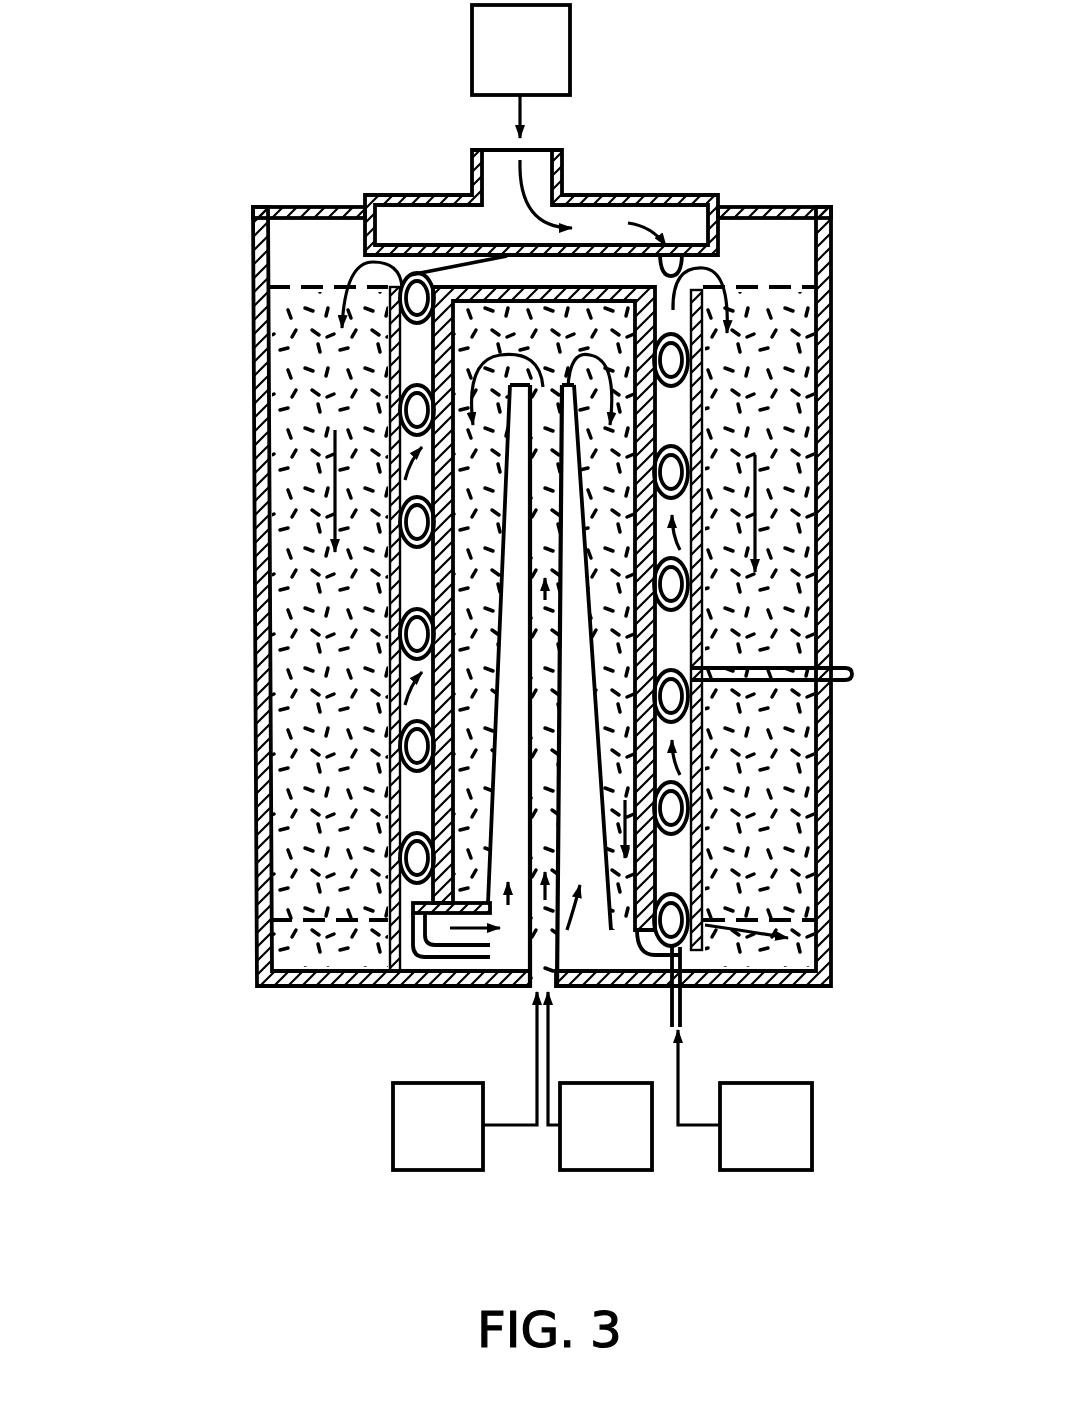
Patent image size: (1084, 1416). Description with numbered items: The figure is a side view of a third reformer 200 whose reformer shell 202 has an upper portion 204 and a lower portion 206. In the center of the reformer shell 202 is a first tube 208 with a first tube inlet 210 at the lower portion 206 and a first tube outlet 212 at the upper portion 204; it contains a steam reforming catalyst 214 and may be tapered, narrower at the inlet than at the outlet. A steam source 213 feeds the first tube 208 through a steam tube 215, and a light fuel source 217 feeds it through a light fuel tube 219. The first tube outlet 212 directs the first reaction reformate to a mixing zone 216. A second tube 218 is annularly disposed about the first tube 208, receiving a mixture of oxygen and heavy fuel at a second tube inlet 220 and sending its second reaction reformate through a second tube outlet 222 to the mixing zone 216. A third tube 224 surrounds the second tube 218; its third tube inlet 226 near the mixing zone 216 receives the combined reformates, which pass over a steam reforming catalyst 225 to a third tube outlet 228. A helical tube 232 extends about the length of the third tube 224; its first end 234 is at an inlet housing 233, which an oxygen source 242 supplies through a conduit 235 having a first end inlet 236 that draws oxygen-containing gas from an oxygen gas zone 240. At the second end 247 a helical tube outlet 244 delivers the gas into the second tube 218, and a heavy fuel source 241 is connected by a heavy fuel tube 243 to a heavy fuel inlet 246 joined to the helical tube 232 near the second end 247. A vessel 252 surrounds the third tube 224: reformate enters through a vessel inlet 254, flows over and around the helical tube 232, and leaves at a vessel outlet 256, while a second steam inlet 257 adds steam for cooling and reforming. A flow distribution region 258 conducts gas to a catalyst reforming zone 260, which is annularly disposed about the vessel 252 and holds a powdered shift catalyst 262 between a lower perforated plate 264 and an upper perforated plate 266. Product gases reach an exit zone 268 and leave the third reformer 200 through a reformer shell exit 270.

The third reformer 200 is at (194, 160).
The reformer shell 202 is at (254, 558).
The upper portion 204 is at (282, 207).
The lower portion 206 is at (270, 986).
The first tube 208 is at (555, 865).
The first tube inlet 210 is at (552, 988).
The first tube outlet 212 is at (544, 644).
The steam source 213 is at (413, 1139).
The steam reforming catalyst 214 is at (535, 795).
The steam tube 215 is at (507, 1130).
The mixing zone 216 is at (477, 330).
The light fuel source 217 is at (581, 1139).
The second tube 218 is at (640, 758).
The light fuel tube 219 is at (553, 1130).
The second tube inlet 220 is at (445, 985).
The second tube outlet 222 is at (568, 383).
The third tube 224 is at (657, 515).
The steam reforming catalyst 225 is at (487, 690).
The third tube inlet 226 is at (610, 340).
The third tube outlet 228 is at (412, 960).
The helical tube 232 is at (662, 420).
The inlet housing 233 is at (548, 150).
The first end 234 is at (684, 262).
The conduit 235 is at (515, 135).
The first end inlet 236 is at (676, 253).
The oxygen gas zone 240 is at (395, 215).
The heavy fuel source 241 is at (741, 1139).
The oxygen source 242 is at (495, 67).
The heavy fuel tube 243 is at (700, 1130).
The helical tube outlet 244 is at (497, 988).
The heavy fuel inlet 246 is at (685, 987).
The second end 247 is at (430, 988).
The vessel 252 is at (390, 480).
The vessel inlet 254 is at (785, 987).
The vessel outlet 256 is at (707, 265).
The second steam inlet 257 is at (852, 668).
The flow distribution region 258 is at (285, 245).
The catalyst reforming zone 260 is at (285, 405).
The catalyst 262 is at (310, 641).
The lower perforated plate 264 is at (290, 906).
The upper perforated plate 266 is at (290, 318).
The exit zone 268 is at (290, 948).
The reformer shell exit 270 is at (825, 936).